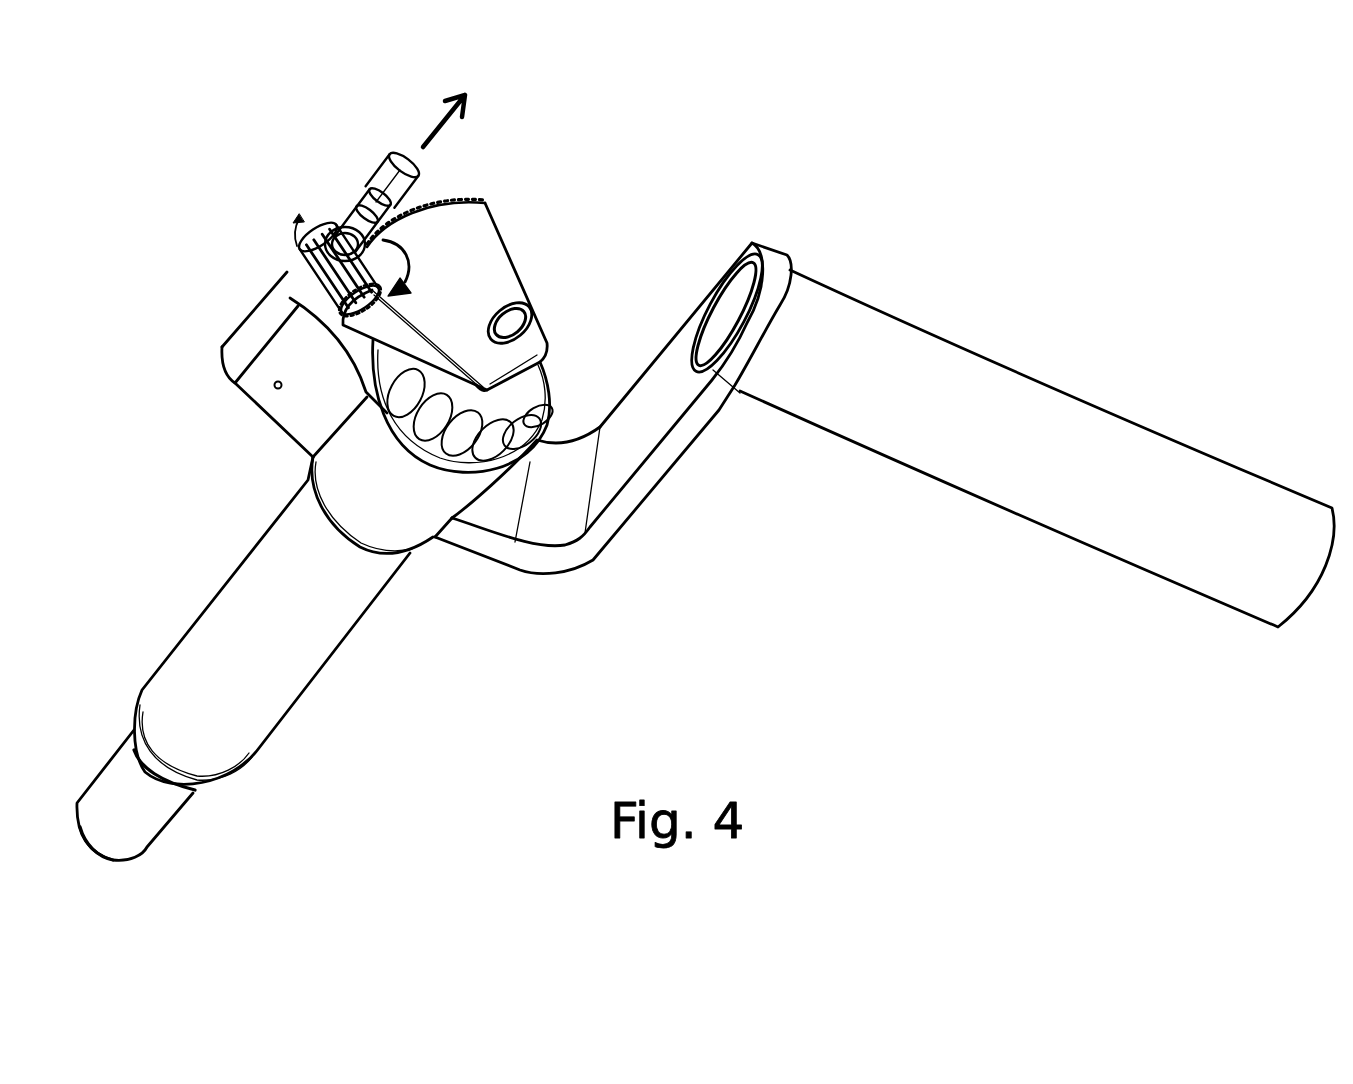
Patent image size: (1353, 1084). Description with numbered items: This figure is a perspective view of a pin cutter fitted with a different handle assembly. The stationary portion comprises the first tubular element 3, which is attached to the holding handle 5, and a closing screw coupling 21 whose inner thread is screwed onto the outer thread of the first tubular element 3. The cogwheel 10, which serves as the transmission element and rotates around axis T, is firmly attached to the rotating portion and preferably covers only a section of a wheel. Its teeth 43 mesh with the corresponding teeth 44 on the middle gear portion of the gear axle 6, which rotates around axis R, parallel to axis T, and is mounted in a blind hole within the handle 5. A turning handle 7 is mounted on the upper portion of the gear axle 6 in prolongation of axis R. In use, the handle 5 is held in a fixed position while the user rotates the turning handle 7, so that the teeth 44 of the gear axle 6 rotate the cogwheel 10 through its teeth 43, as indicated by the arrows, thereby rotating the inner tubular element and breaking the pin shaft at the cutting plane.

The first tubular element 3 is at (246, 718).
The holding handle 5 is at (913, 440).
The gear axle 6 is at (352, 229).
The turning handle 7 is at (471, 96).
The cogwheel 10 is at (483, 252).
The closing screw coupling 21 is at (527, 397).
The teeth 43 is at (453, 198).
The teeth 44 is at (288, 268).